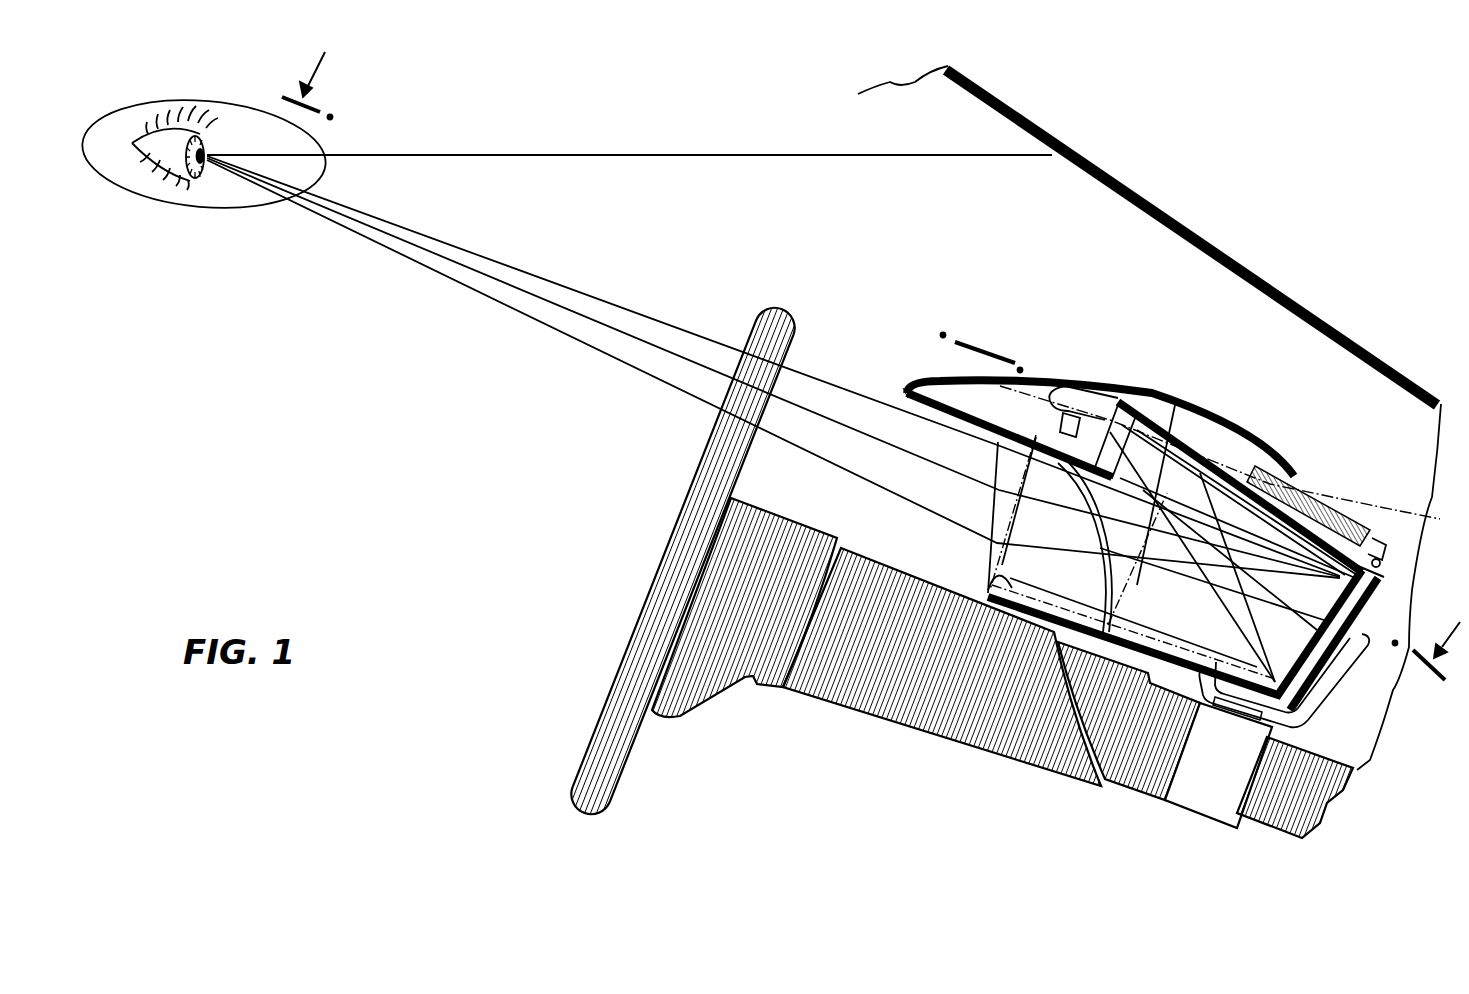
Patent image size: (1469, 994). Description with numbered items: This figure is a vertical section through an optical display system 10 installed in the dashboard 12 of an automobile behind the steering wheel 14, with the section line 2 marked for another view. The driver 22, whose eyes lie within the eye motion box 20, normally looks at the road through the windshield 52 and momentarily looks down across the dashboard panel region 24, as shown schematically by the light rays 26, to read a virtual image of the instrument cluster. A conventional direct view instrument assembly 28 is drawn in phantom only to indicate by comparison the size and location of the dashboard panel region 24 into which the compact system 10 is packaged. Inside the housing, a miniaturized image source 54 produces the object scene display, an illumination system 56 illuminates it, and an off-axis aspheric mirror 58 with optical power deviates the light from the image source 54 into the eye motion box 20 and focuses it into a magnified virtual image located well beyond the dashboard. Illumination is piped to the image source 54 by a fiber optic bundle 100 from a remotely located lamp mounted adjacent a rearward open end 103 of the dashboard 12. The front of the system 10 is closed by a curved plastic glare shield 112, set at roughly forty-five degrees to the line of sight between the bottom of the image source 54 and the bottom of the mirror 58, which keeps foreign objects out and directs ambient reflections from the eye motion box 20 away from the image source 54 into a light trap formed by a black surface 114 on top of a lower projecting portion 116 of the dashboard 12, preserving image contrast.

The section line 2- 2 is at (871, 364).
The optical display system 10 is at (1404, 681).
The dashboard 12 is at (1086, 366).
The steering wheel 14 is at (587, 750).
The eye motion box 20 is at (255, 207).
The driver 22 is at (170, 168).
The dashboard panel region 24 is at (982, 499).
The light rays 26 is at (572, 338).
The direct view instrument assembly 28 is at (1232, 459).
The windshield 52 is at (1200, 236).
The image source 54 is at (1043, 435).
The illumination system 56 is at (1340, 525).
The off-axis aspheric mirror 58 is at (1350, 655).
The fiber optic bundle 100 is at (1180, 403).
The rearward open end 103 is at (1305, 478).
The glare shield 112 is at (1098, 572).
The black surface 114 is at (995, 572).
The lower projecting portion 116 is at (980, 428).